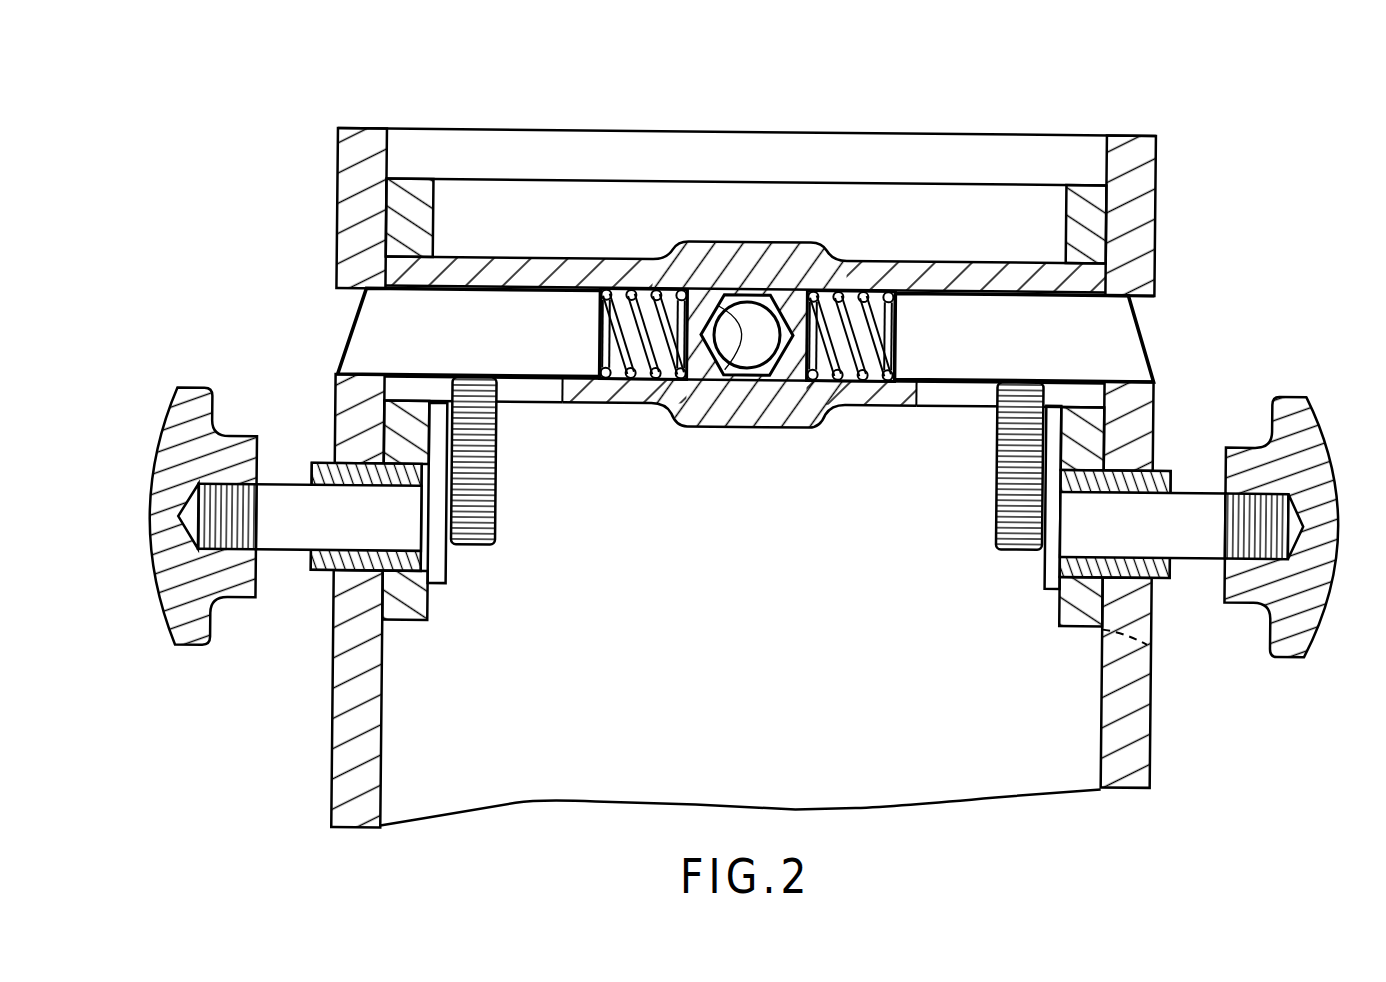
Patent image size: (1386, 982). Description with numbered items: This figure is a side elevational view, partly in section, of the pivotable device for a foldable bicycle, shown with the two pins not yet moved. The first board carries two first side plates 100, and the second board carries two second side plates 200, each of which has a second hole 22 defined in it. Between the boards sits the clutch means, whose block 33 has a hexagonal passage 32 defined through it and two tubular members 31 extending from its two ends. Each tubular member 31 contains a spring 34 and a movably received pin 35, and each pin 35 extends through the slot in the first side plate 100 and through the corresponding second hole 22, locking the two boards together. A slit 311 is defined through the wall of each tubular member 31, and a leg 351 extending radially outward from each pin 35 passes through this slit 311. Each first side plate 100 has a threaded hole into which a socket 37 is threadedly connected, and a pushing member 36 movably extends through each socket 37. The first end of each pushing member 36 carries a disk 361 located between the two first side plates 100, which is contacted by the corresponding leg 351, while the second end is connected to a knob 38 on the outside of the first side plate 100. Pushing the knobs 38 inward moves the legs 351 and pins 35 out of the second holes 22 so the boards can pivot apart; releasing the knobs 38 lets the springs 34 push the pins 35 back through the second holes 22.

The second hole 22 is at (1145, 310).
The tubular member 31 is at (885, 398).
The slit 311 is at (963, 400).
The hexagonal passage 32 is at (672, 412).
The block 33 is at (746, 410).
The spring 34 is at (817, 317).
The pin 35 is at (1060, 330).
The leg 351 is at (997, 525).
The pushing member 36 is at (1198, 540).
The disk 361 is at (1055, 565).
The socket 37 is at (1165, 470).
The knob 38 is at (1310, 445).
The first side plate 100 is at (1068, 620).
The second side plate 200 is at (1132, 720).